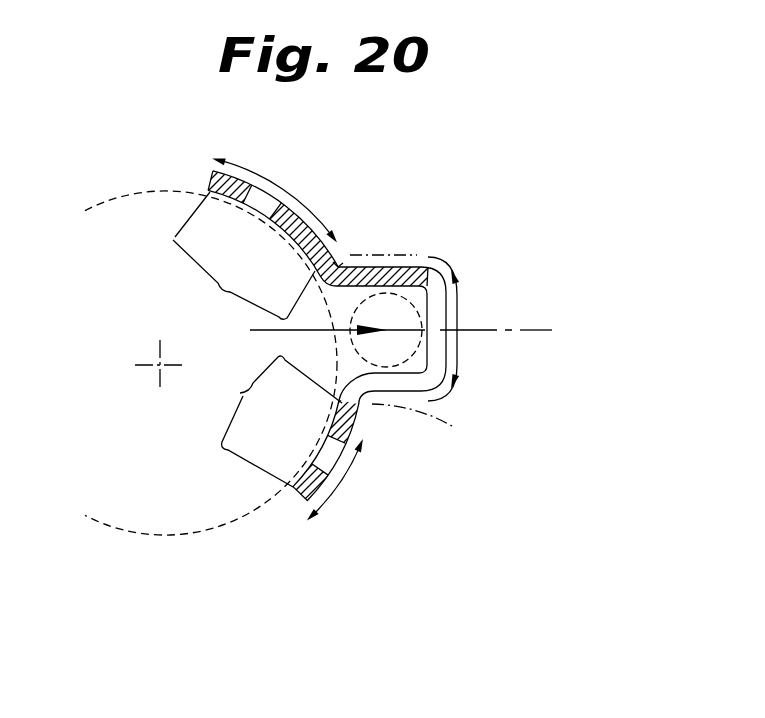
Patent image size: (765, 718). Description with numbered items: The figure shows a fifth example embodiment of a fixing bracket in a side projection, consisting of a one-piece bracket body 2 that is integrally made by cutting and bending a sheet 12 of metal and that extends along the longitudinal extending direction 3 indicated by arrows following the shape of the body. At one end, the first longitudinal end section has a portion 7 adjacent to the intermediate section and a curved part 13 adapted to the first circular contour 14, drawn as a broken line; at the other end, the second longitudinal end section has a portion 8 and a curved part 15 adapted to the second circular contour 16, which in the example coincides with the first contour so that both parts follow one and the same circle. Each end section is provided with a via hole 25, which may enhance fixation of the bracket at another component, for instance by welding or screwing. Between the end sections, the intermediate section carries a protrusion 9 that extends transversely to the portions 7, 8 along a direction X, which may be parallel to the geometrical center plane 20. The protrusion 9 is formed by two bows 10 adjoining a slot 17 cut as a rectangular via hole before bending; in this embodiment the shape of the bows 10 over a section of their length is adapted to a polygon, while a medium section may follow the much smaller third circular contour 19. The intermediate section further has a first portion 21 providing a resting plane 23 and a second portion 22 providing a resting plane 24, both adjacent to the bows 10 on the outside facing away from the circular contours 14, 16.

The bracket body 2 is at (382, 310).
The longitudinal extending direction 3 is at (343, 477).
The portion of the first longitudinal end section 7 is at (313, 249).
The portion of the second longitudinal end section 8 is at (348, 413).
The protrusion 9 is at (502, 329).
The bows 10 is at (502, 329).
The slot 17 is at (438, 316).
The sheet 12 is at (345, 430).
The part of the first longitudinal end section 13 is at (217, 288).
The first circular contour 14 is at (155, 191).
The part of the second longitudinal end section 15 is at (240, 393).
The second circular contour 16 is at (163, 535).
The third circular contour 19 is at (428, 347).
The geometrical center plane 20 is at (540, 332).
The first portion of the intermediate section 21 is at (330, 263).
The second portion of the intermediate section 22 is at (415, 353).
The resting plane 23 is at (337, 264).
The resting plane 24 is at (369, 400).
The via hole 25 is at (330, 459).
The direction X is at (270, 336).